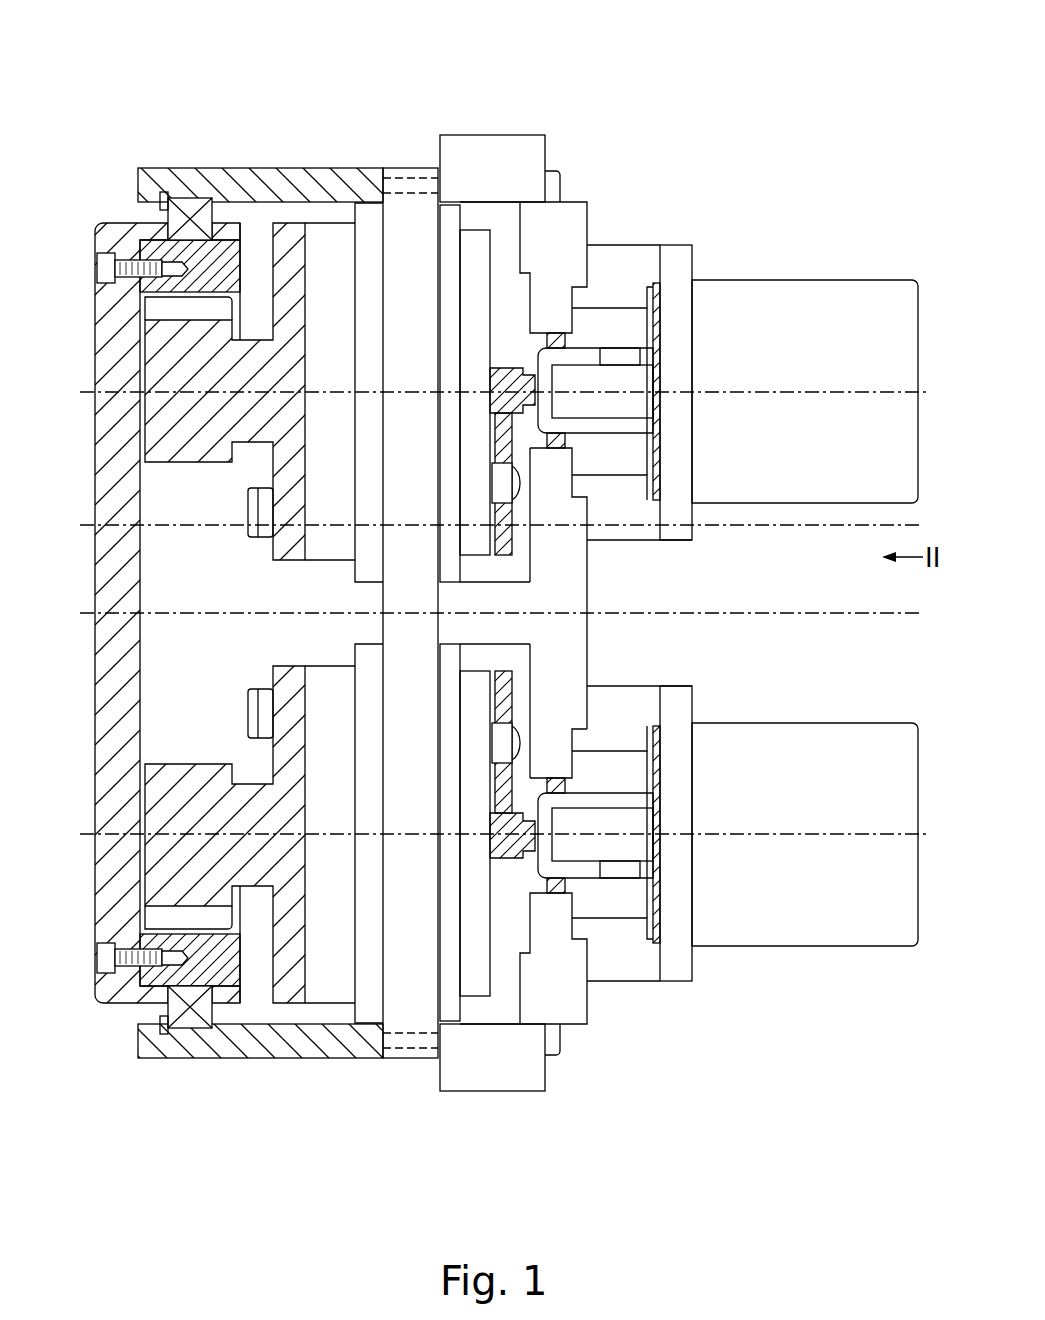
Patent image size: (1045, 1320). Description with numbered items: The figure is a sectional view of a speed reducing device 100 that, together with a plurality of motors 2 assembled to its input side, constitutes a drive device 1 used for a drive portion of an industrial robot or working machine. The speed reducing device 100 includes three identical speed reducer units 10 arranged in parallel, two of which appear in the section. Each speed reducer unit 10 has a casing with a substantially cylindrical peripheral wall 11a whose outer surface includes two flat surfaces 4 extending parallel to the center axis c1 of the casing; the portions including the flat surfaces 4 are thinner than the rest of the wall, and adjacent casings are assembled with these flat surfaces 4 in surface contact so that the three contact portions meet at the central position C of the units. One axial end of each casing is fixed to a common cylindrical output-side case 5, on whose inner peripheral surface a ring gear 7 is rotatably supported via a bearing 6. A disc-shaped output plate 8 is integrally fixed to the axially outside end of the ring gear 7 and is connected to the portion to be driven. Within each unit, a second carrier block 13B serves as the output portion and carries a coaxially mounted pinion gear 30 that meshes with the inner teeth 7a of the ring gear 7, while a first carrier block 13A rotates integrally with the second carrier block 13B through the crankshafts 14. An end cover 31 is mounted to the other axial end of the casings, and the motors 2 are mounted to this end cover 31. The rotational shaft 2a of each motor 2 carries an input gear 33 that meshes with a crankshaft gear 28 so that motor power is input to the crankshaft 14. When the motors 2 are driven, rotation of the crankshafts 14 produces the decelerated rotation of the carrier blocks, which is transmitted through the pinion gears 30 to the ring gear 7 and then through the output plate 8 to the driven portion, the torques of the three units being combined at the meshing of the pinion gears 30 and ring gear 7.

The drive device 1 is at (862, 100).
The motor 2 is at (858, 278).
The rotational shaft 2a is at (597, 363).
The flat surface 4 is at (412, 585).
The output-side case 5 is at (228, 185).
The bearing 6 is at (185, 205).
The ring gear 7 is at (167, 243).
The inner teeth 7a is at (140, 300).
The output plate 8 is at (95, 342).
The speed reducer unit 10 is at (456, 192).
The peripheral wall 11a is at (403, 165).
The first carrier block 13A is at (490, 243).
The second carrier block 13B is at (317, 243).
The crankshaft 14 is at (518, 487).
The crankshaft gear 28 is at (508, 555).
The pinion gear 30 is at (153, 487).
The end cover 31 is at (578, 202).
The input gear 33 is at (507, 368).
The speed reducing device 100 is at (428, 130).
The center axis c1 is at (875, 390).
The central position C is at (887, 613).